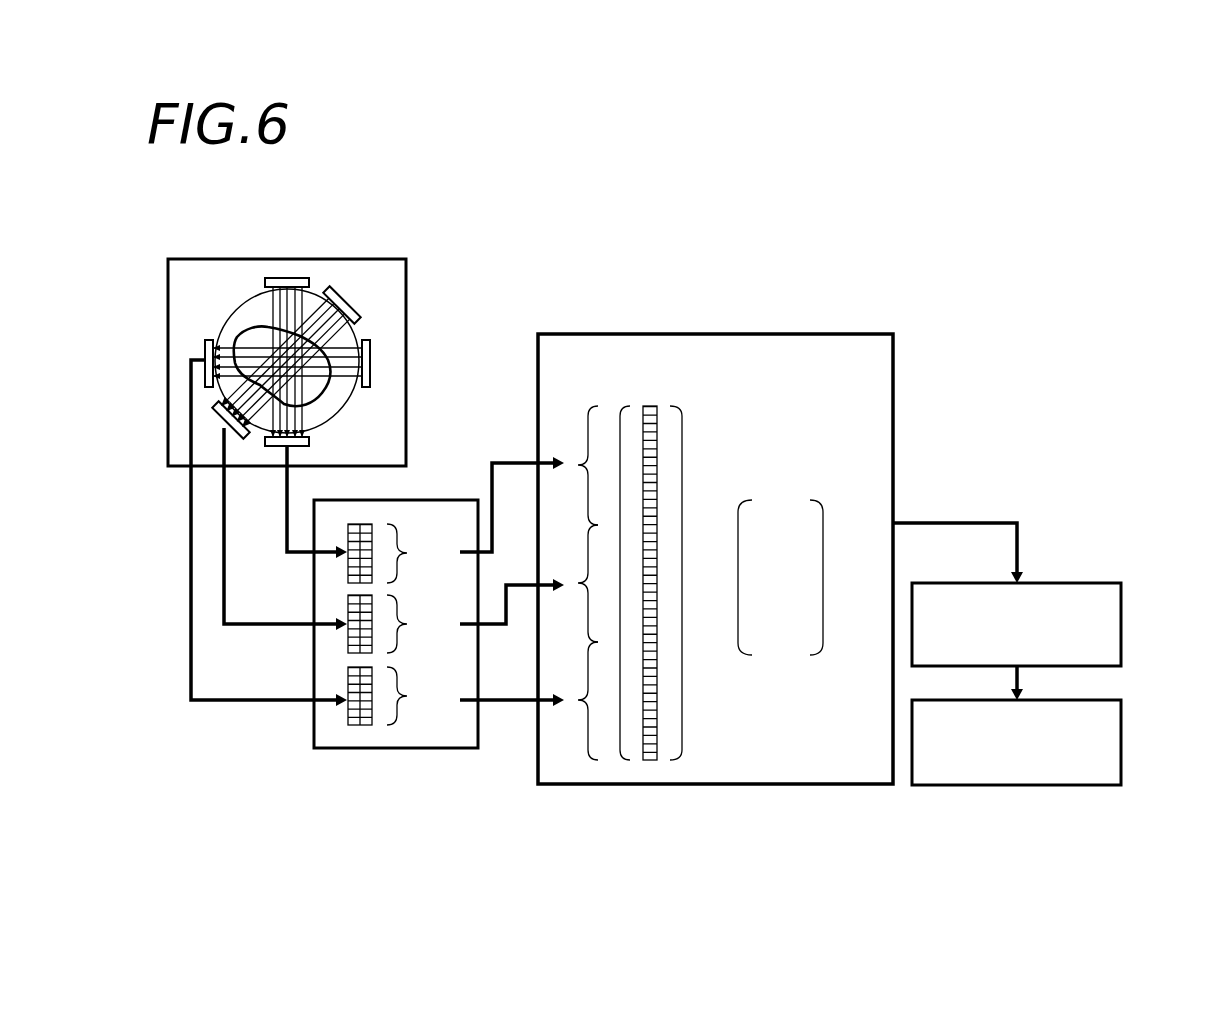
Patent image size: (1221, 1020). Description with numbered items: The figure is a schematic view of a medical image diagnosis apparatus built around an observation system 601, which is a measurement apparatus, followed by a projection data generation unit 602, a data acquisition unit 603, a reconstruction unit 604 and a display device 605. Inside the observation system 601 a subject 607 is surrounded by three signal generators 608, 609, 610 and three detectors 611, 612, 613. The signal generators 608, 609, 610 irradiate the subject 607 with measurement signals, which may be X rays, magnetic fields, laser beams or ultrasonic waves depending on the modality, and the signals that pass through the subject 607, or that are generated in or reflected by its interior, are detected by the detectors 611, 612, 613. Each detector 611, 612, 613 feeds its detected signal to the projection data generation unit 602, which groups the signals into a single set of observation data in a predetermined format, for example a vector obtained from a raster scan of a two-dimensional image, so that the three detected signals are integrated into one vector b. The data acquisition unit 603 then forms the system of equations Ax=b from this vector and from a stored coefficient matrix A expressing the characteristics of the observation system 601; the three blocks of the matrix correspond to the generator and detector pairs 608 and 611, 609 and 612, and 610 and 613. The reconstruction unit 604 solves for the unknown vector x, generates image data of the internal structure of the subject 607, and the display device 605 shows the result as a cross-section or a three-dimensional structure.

The observation system 601 is at (340, 259).
The projection data generation unit 602 is at (375, 750).
The data acquisition unit 603 is at (755, 334).
The reconstruction unit 604 is at (1122, 622).
The display device 605 is at (1122, 734).
The subject 607 is at (252, 340).
The signal generator 608 is at (284, 281).
The signal generator 609 is at (350, 310).
The signal generator 610 is at (367, 366).
The detector 611 is at (205, 348).
The detector 612 is at (222, 426).
The detector 613 is at (308, 443).